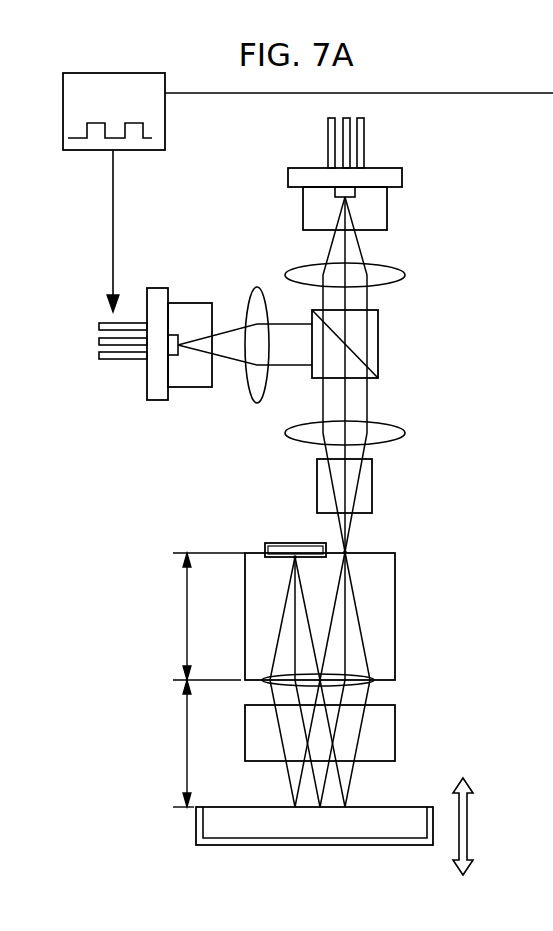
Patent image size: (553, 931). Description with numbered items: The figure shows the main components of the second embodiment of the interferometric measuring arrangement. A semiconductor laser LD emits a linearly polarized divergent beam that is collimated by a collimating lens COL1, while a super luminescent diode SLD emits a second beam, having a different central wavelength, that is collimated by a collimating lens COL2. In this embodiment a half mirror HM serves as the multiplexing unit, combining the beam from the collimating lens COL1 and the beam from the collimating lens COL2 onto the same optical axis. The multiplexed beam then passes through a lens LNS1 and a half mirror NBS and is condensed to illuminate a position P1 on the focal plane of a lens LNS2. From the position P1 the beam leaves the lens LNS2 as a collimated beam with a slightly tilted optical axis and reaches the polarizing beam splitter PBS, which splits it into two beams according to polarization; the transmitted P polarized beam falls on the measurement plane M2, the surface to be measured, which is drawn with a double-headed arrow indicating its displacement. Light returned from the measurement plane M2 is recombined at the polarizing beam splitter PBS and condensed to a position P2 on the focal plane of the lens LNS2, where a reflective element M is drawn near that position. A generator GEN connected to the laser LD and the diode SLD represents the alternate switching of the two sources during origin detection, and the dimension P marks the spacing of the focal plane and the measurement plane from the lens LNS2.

The signal generator GEN is at (308, 192).
The semiconductor laser LD is at (385, 204).
The collimating lens COL1 is at (402, 272).
The half mirror HM is at (374, 324).
The super luminescent diode SLD is at (158, 288).
The collimating lens COL2 is at (257, 288).
The lens LNS1 is at (402, 430).
The half mirror NBS is at (370, 480).
The position P1 is at (347, 548).
The mirror M is at (283, 543).
The position P2 is at (278, 558).
The lens LNS2 is at (374, 681).
The polarizing beam splitter PBS is at (388, 728).
The measurement plane M2 is at (413, 813).
The distance P is at (206, 680).